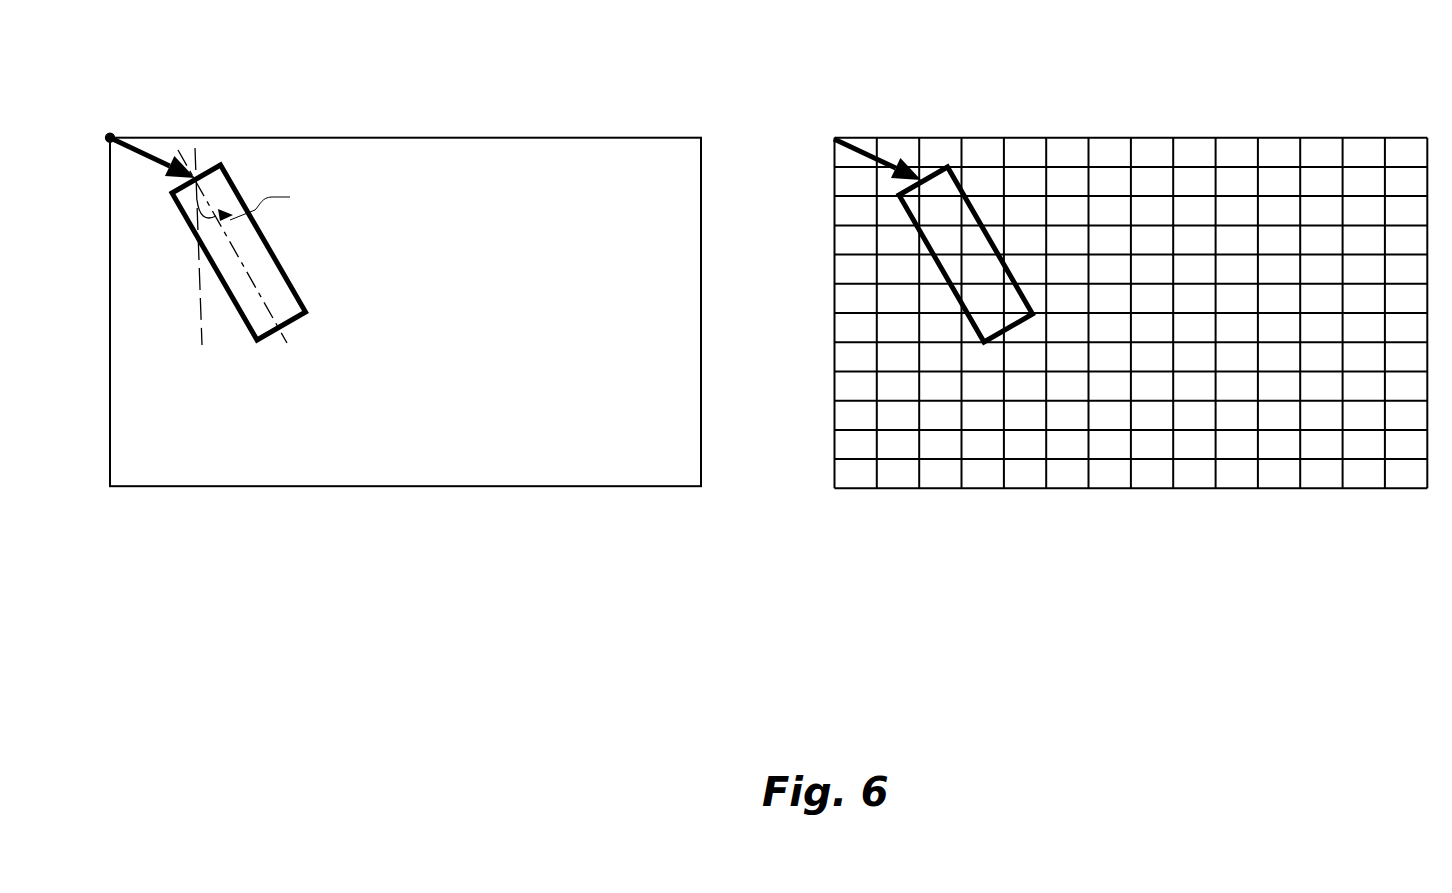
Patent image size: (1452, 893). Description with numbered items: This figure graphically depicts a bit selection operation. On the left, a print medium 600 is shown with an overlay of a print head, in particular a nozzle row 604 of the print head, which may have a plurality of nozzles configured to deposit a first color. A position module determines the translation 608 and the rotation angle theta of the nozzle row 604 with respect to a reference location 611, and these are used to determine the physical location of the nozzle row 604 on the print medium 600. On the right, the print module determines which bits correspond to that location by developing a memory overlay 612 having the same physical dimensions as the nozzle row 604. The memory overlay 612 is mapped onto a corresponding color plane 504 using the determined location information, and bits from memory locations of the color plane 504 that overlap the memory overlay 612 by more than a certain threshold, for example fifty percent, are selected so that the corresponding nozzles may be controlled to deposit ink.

The print medium 600 is at (407, 137).
The nozzle row 604 is at (300, 288).
The translation 608 is at (162, 152).
The reference location 611 is at (113, 133).
The memory overlay 612 is at (968, 197).
The color plane 504 is at (1158, 137).